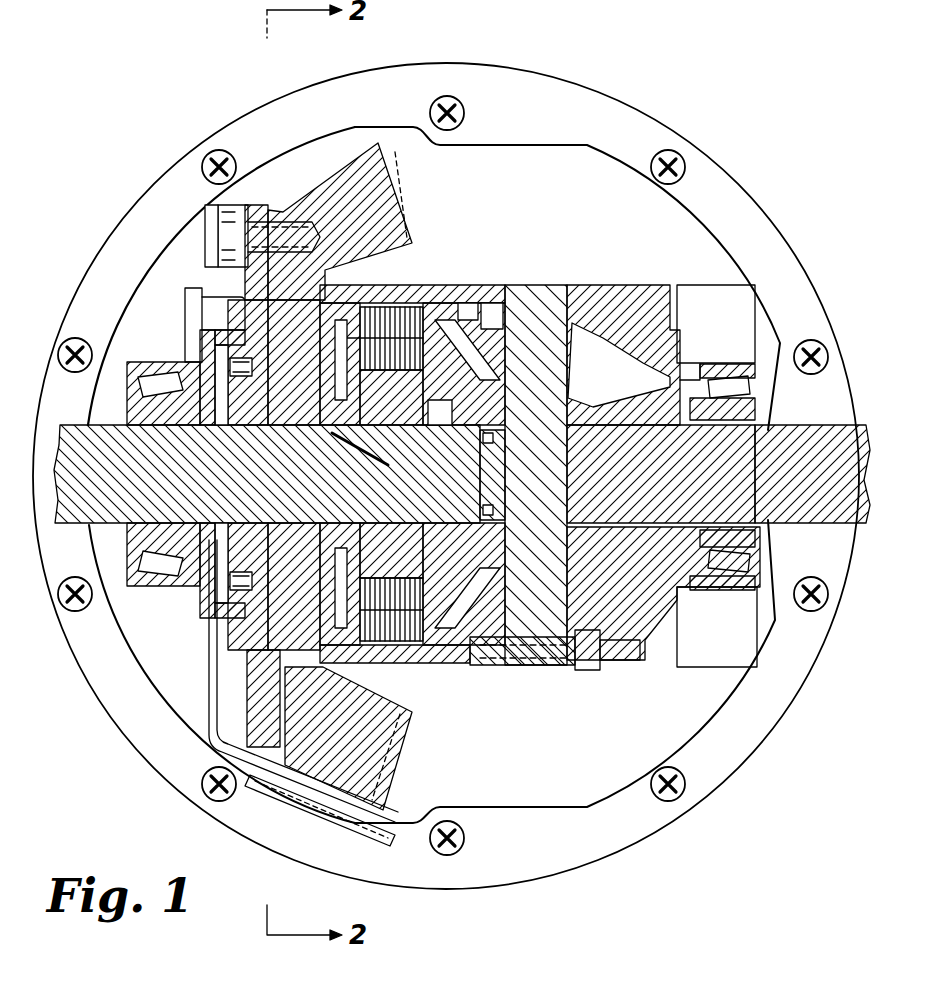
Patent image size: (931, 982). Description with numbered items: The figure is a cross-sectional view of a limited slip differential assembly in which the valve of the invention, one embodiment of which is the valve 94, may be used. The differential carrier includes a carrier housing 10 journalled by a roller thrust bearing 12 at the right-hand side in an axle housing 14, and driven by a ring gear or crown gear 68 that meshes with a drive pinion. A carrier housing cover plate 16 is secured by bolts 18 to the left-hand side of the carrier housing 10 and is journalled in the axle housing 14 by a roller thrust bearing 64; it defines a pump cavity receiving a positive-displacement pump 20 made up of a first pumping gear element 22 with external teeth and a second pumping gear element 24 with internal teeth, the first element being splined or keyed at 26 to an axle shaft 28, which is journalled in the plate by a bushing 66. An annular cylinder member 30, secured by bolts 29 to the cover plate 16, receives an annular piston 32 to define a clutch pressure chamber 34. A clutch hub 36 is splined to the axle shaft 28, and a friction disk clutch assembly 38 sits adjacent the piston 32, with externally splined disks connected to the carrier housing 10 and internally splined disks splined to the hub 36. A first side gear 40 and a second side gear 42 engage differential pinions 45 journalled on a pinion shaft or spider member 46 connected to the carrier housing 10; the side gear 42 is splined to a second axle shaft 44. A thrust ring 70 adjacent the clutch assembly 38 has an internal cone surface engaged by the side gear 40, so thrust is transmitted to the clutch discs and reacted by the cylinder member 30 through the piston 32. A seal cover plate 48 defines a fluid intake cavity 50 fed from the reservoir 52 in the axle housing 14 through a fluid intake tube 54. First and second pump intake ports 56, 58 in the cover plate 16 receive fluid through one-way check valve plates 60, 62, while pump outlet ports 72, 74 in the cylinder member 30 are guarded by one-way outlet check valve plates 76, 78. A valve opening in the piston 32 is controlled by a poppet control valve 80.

The carrier housing 10 is at (440, 287).
The roller thrust bearing 12 is at (710, 382).
The axle housing 14 is at (752, 231).
The carrier housing cover plate 16 is at (218, 205).
The bolts 18 is at (270, 205).
The positive-displacement pump 20 is at (270, 325).
The first pumping gear element 22 is at (232, 590).
The second pumping gear element 24 is at (222, 638).
The spline or key 26 is at (335, 410).
The axle shaft 28 is at (134, 489).
The bolts 29 is at (213, 700).
The annular cylinder member 30 is at (397, 425).
The annular piston 32 is at (458, 300).
The clutch pressure chamber 34 is at (413, 665).
The clutch hub 36 is at (507, 292).
The friction disk clutch assembly 38 is at (502, 663).
The first side gear 40 is at (440, 420).
The second side gear 42 is at (600, 432).
The second axle shaft 44 is at (695, 489).
The differential pinions 45 is at (610, 330).
The pinion shaft or spider member 46 is at (545, 667).
The seal cover plate 48 is at (208, 348).
The fluid intake cavity 50 is at (222, 612).
The axle fluid reservoir 52 is at (540, 778).
The fluid intake tube 54 is at (225, 758).
The first pump intake port 56 is at (228, 410).
The second pump intake port 58 is at (318, 410).
The one-way check valve plate 60 is at (262, 410).
The one-way check valve plate 62 is at (335, 672).
The roller thrust bearing 64 is at (200, 575).
The bushing 66 is at (212, 410).
The ring gear or crown gear 68 is at (400, 200).
The thrust ring 70 is at (470, 300).
The pump outlet port 72 is at (300, 222).
The pump outlet port 74 is at (466, 668).
The one-way outlet check valve plate 76 is at (398, 305).
The one-way outlet check valve plate 78 is at (345, 440).
The poppet control valve 80 is at (503, 360).
The valve 94 is at (440, 455).